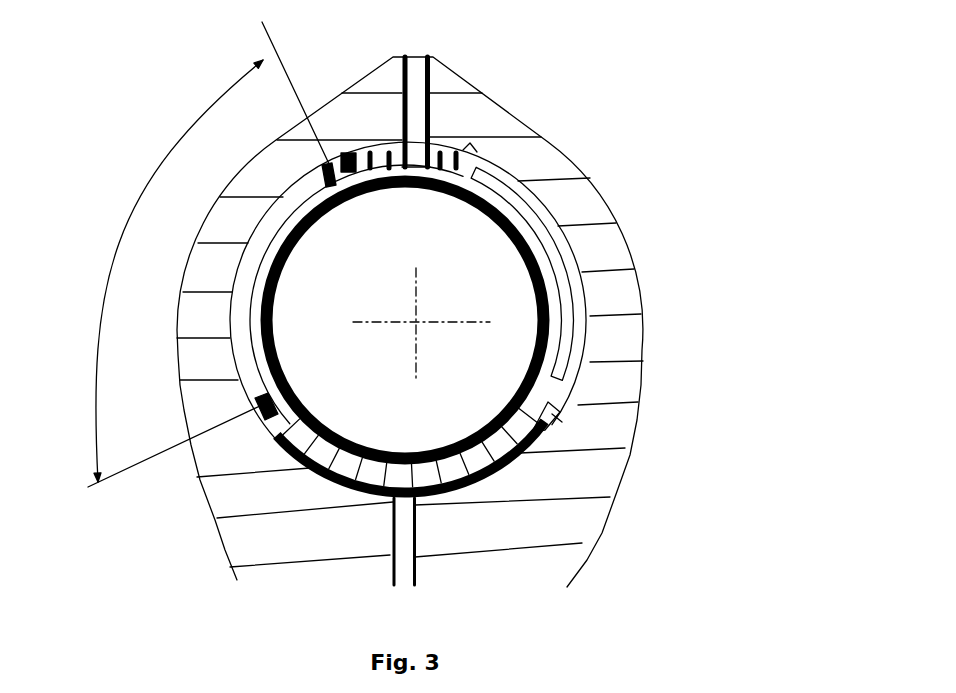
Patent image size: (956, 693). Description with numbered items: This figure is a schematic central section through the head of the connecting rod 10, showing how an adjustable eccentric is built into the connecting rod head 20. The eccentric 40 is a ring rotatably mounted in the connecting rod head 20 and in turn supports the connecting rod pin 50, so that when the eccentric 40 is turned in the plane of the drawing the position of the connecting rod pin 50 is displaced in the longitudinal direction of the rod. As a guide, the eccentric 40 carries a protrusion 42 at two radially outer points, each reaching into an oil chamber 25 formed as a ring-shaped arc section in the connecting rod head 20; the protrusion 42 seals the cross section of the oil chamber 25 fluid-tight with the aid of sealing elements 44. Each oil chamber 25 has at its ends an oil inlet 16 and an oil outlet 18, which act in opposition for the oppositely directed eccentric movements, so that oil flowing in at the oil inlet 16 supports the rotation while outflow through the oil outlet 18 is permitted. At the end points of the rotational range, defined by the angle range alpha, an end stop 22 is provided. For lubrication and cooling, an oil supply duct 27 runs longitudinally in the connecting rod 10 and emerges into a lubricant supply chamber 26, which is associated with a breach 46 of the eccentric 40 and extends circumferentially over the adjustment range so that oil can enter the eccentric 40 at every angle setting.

The connecting rod 10 is at (744, 157).
The oil inlet 16 is at (370, 152).
The oil outlet 18 is at (467, 152).
The connecting rod head 20 is at (582, 197).
The end stop 22 is at (377, 157).
The oil chamber 25 is at (555, 232).
The lubricant supply chamber 26 is at (478, 496).
The oil supply duct 27 is at (408, 532).
The eccentric 40 is at (560, 297).
The protrusion 42 is at (325, 165).
The sealing element 44 is at (333, 158).
The breach 46 is at (285, 440).
The connecting rod pin 50 is at (333, 355).